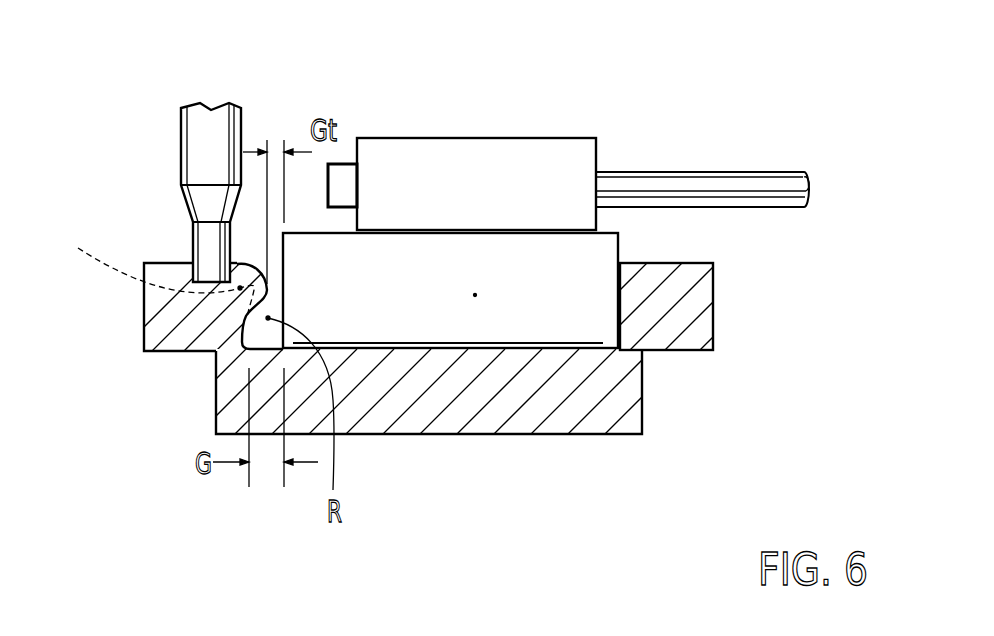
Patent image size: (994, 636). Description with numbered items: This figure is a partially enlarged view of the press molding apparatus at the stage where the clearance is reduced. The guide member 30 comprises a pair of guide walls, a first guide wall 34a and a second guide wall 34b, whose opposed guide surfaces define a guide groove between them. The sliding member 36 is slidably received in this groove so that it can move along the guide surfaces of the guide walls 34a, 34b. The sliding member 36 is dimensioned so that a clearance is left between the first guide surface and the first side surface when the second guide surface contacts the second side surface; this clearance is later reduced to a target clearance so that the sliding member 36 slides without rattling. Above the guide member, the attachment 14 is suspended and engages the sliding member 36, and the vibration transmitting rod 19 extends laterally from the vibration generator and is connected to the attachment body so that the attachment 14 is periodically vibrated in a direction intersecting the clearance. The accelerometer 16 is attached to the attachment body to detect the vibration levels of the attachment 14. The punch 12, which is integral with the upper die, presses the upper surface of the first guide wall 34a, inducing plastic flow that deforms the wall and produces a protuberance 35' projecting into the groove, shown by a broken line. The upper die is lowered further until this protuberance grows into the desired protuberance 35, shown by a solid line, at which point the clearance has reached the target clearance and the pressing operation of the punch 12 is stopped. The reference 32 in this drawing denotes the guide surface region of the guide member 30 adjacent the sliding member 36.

The punch 12 is at (195, 150).
The attachment 14 is at (493, 153).
The accelerometer 16 is at (347, 183).
The vibration transmitting rod 19 is at (693, 180).
The guide member 30 is at (483, 415).
The body 32 is at (615, 293).
The first guide wall 34a is at (192, 305).
The second guide wall 34b is at (658, 328).
The protuberance 35 is at (175, 337).
The protuberance 35' is at (144, 271).
The sliding member 36 is at (430, 308).